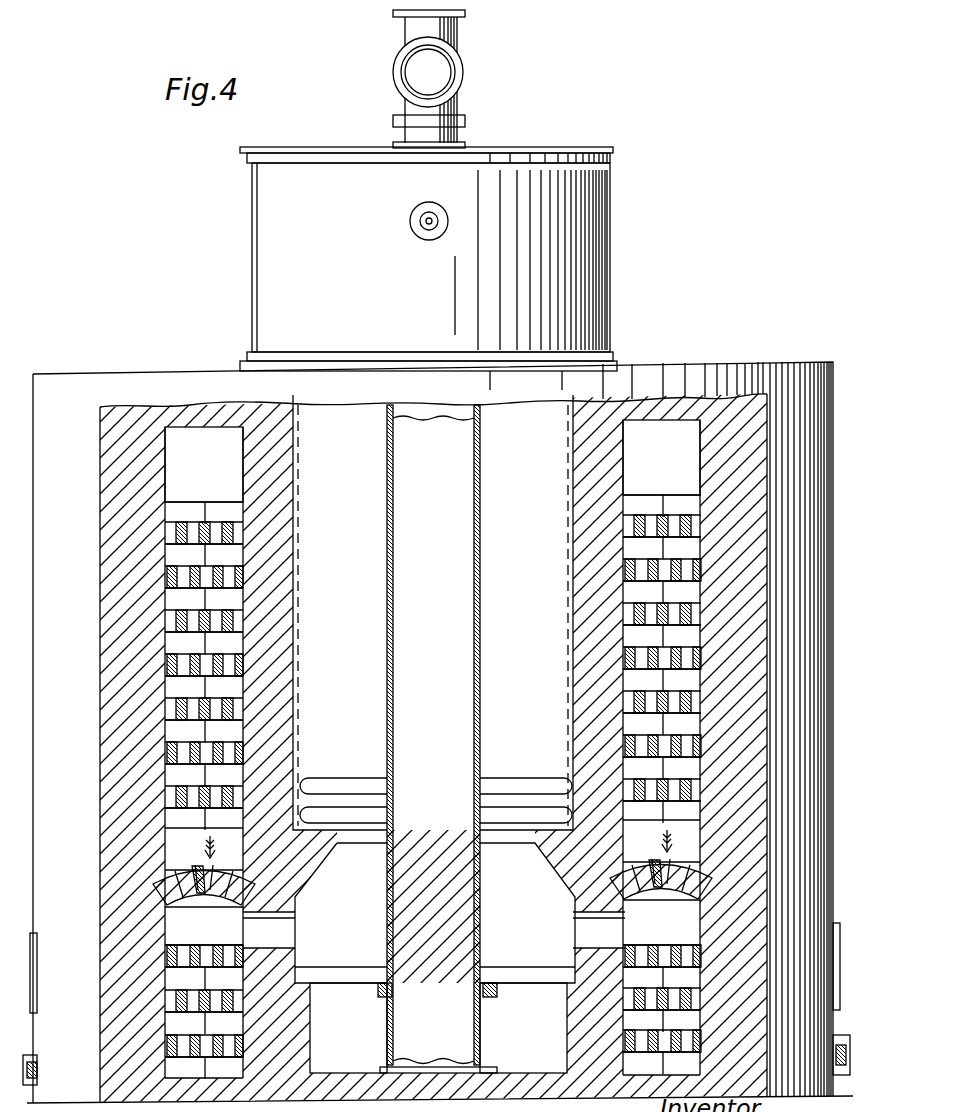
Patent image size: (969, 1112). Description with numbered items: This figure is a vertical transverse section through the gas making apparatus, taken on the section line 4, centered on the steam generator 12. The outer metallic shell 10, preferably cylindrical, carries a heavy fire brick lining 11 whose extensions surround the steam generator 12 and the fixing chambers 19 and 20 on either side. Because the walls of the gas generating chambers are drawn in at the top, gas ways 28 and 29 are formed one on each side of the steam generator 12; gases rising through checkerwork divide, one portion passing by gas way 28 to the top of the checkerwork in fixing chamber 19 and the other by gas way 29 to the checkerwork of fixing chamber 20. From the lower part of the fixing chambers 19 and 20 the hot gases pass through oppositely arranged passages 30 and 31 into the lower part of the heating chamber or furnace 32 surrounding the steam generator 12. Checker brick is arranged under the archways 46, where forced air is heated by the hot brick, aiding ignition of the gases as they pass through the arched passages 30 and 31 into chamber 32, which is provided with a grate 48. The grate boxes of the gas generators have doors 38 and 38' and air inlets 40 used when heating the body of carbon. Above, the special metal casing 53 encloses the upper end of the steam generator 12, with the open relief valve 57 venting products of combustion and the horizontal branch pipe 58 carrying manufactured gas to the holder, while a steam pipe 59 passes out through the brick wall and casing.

The section line 4 is at (33, 1062).
The outer metallic shell 10 is at (100, 772).
The fire brick lining 11 is at (283, 709).
The steam generator 12 is at (436, 739).
The fixing chamber 19 is at (662, 747).
The fixing chamber 20 is at (204, 753).
The gas way 28 is at (661, 457).
The gas way 29 is at (204, 464).
The passage 30 is at (599, 930).
The passage 31 is at (269, 930).
The heating chamber 32 is at (435, 913).
The door 38 is at (847, 952).
The door 38' is at (54, 969).
The air inlet 40 is at (836, 1045).
The archway 46 is at (210, 858).
The grate 48 is at (358, 961).
The special casing 53 is at (428, 259).
The relief valve 57 is at (463, 15).
The horizontal branch pipe 58 is at (428, 72).
The steam pipe 59 is at (429, 212).